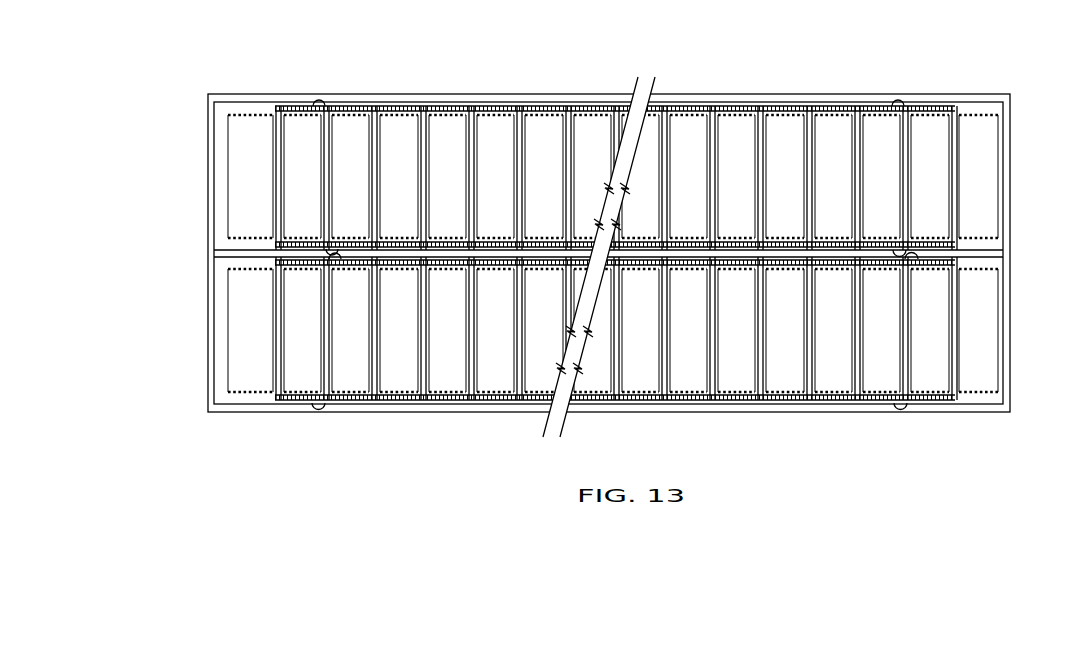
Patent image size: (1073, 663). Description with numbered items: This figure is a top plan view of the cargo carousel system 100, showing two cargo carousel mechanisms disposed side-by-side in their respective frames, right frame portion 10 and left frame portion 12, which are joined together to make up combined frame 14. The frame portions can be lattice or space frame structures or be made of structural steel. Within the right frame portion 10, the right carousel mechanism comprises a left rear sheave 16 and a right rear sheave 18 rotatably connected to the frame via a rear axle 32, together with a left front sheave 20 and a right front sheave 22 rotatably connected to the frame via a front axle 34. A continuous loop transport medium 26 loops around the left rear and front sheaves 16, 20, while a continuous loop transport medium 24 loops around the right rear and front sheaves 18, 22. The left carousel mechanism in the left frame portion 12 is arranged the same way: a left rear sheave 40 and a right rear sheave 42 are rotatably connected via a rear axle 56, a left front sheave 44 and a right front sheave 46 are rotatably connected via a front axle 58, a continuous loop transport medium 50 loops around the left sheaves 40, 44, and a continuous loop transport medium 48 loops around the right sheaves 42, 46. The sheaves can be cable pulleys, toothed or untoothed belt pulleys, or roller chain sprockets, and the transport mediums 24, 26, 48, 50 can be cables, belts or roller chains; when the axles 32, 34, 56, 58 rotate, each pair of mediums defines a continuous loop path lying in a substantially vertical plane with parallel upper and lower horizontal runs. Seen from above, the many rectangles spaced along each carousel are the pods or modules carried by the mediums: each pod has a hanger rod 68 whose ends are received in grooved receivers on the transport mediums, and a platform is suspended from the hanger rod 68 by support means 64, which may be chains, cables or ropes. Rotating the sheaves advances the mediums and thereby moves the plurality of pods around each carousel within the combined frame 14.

The system 100 is at (548, 30).
The right frame portion 10 is at (996, 113).
The left frame portion 12 is at (995, 279).
The combined frame 14 is at (985, 100).
The left rear sheave 16 is at (315, 243).
The right rear sheave 18 is at (343, 107).
The left front sheave 20 is at (941, 244).
The right front sheave 22 is at (920, 107).
The continuous loop transport medium 24 is at (803, 107).
The continuous loop transport medium 26 is at (794, 245).
The rear axle 32 is at (319, 110).
The front axle 34 is at (896, 110).
The left rear sheave 40 is at (312, 265).
The right rear sheave 42 is at (360, 396).
The left front sheave 44 is at (923, 396).
The right front sheave 46 is at (897, 265).
The continuous loop transport medium 48 is at (794, 264).
The continuous loop transport medium 50 is at (795, 396).
The rear axle 56 is at (336, 263).
The front axle 58 is at (914, 263).
The support means 64 is at (440, 116).
The hanger rod 68 is at (562, 133).